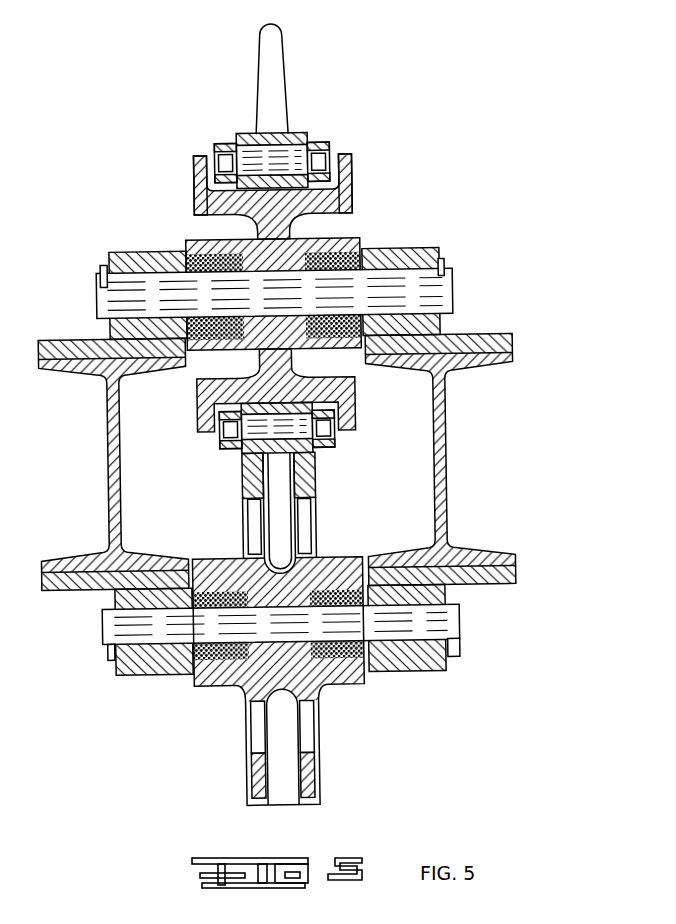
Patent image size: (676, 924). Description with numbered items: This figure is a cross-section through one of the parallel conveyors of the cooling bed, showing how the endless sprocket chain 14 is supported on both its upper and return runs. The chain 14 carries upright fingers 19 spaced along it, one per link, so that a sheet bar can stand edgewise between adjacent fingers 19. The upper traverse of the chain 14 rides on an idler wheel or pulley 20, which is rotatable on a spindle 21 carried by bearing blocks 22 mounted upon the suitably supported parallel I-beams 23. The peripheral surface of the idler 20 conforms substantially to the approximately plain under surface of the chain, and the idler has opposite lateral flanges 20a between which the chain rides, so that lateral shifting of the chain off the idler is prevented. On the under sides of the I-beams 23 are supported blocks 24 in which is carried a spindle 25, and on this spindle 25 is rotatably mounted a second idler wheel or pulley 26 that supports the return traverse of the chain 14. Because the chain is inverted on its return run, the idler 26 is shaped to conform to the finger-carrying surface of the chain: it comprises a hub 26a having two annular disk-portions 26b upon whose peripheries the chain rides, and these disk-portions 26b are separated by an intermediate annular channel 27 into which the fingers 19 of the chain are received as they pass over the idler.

The endless sprocket chain 14 is at (317, 133).
The upright fingers 19 is at (263, 77).
The idler wheel or pulley 20 is at (356, 257).
The lateral flanges 20a is at (198, 173).
The spindle 21 is at (100, 293).
The bearing blocks 22 is at (140, 255).
The I-beams 23 is at (109, 464).
The blocks 24 is at (443, 602).
The spindle 25 is at (100, 628).
The idler wheel or pulley 26 is at (276, 696).
The hub 26a is at (218, 674).
The annular disk-portions 26b is at (263, 803).
The annular channel 27 is at (262, 537).